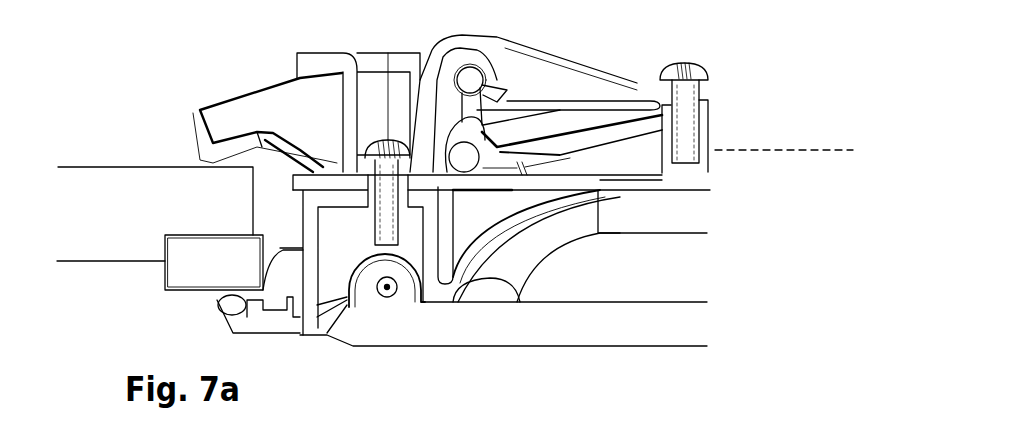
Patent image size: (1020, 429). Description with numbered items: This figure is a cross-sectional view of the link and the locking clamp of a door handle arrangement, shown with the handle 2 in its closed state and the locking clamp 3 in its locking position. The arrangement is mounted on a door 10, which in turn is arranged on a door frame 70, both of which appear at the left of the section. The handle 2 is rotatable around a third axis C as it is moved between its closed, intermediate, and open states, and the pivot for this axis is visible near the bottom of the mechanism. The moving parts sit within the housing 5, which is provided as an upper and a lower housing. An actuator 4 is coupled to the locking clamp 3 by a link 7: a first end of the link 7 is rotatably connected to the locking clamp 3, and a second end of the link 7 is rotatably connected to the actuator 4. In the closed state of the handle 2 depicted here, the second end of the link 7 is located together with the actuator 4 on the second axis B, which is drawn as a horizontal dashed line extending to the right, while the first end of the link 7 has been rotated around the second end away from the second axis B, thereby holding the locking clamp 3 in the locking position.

The handle 2 is at (623, 328).
The locking clamp 3 is at (270, 110).
The actuator 4 is at (527, 150).
The housing 5 is at (510, 65).
The link 7 is at (560, 92).
The door 10 is at (173, 283).
The door frame 70 is at (145, 187).
The second axis B is at (793, 133).
The third axis C is at (386, 297).